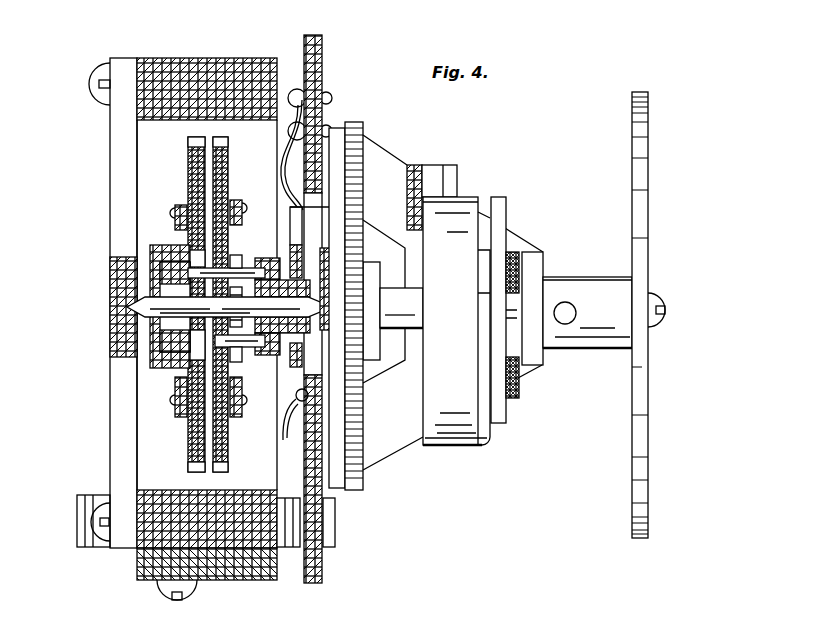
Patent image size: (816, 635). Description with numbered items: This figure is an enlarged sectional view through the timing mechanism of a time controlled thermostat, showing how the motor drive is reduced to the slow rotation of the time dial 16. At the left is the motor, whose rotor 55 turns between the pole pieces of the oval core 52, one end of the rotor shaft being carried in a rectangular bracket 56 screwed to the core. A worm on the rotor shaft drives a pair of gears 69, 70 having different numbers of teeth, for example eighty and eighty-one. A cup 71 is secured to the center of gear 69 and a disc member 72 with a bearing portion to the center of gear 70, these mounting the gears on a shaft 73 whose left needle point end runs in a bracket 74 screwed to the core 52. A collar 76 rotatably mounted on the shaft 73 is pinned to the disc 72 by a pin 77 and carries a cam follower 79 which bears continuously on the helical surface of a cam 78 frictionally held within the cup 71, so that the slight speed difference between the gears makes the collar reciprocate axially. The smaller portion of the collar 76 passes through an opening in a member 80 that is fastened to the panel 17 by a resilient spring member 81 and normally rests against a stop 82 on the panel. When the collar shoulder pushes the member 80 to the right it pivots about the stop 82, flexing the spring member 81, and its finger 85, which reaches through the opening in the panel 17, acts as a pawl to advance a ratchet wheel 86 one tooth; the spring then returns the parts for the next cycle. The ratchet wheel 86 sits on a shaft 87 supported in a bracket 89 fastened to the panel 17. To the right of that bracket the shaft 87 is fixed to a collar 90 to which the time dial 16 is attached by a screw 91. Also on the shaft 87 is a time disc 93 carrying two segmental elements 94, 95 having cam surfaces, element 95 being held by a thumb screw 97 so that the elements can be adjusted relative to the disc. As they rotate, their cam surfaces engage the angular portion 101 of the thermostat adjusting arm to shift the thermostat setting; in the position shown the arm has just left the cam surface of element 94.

The timing dial 16 is at (648, 175).
The panel 17 is at (322, 55).
The core 52 is at (195, 65).
The rotor 55 is at (85, 520).
The rectangular bracket 56 is at (228, 578).
The gear 69 is at (190, 160).
The gear 70 is at (230, 165).
The cup 71 is at (156, 244).
The disc member 72 is at (245, 205).
The shaft 73 is at (152, 307).
The bracket 74 is at (113, 220).
The collar 76 is at (243, 400).
The pin 77 is at (262, 350).
The cam 78 is at (155, 350).
The cam follower 79 is at (250, 268).
The member 80 is at (295, 420).
The spring member 81 is at (290, 158).
The stop 82 is at (350, 408).
The finger 85 is at (355, 370).
The ratchet wheel 86 is at (360, 124).
The shaft 87 is at (408, 306).
The bracket 89 is at (395, 448).
The collar 90 is at (588, 275).
The screw 91 is at (663, 302).
The time disc 93 is at (498, 215).
The segmental element 94 is at (462, 205).
The segmental element 95 is at (478, 440).
The thumb screw 97 is at (520, 395).
The angular portion 101 is at (440, 170).